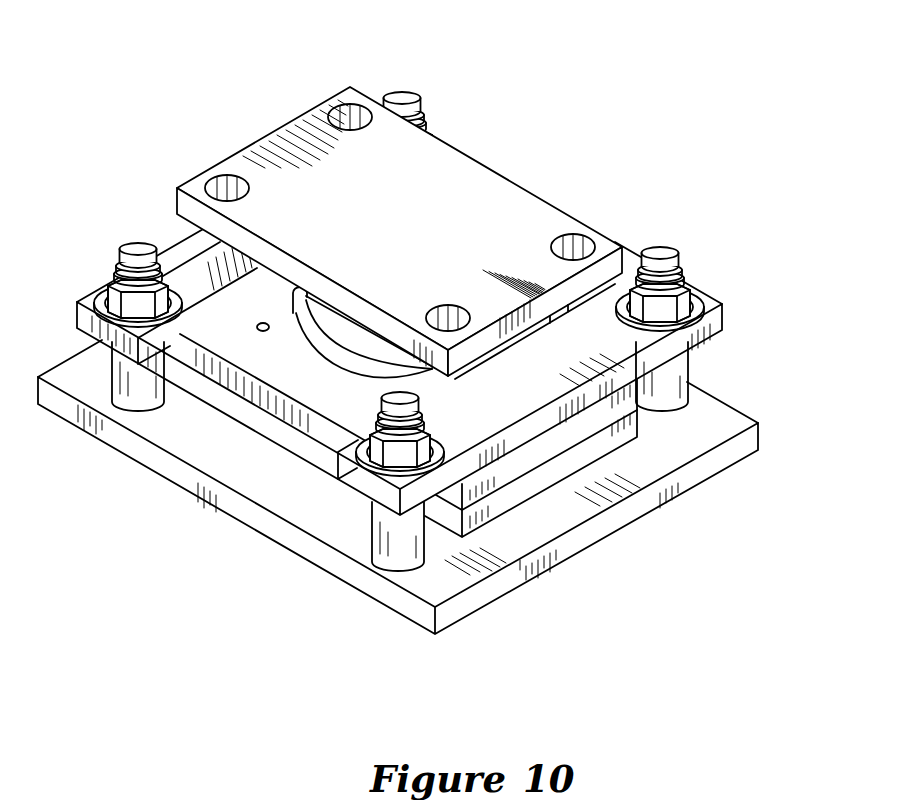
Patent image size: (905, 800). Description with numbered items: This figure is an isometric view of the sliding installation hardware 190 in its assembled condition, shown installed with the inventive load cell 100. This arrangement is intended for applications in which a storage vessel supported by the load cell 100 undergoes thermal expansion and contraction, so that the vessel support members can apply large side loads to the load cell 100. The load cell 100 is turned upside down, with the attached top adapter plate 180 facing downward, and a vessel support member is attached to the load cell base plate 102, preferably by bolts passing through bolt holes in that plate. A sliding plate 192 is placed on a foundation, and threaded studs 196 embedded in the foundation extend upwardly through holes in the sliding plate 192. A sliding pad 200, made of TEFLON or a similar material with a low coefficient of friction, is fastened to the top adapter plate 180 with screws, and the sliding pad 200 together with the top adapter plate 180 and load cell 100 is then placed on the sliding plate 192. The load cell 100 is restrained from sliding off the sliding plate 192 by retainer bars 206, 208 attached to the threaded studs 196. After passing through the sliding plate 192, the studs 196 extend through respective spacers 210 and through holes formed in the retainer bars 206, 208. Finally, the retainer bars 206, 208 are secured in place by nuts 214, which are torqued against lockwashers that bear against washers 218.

The load cell 100 is at (306, 288).
The load cell base plate 102 is at (445, 217).
The top adapter plate 180 is at (538, 462).
The sliding installation hardware 190 is at (117, 66).
The sliding plate 192 is at (500, 583).
The embedded studs 196 is at (138, 250).
The sliding pad 200 is at (567, 530).
The retainer bar 206 is at (203, 280).
The retainer bar 208 is at (553, 392).
The spacers 210 is at (133, 392).
The nuts 214 is at (114, 269).
The washers 218 is at (103, 310).